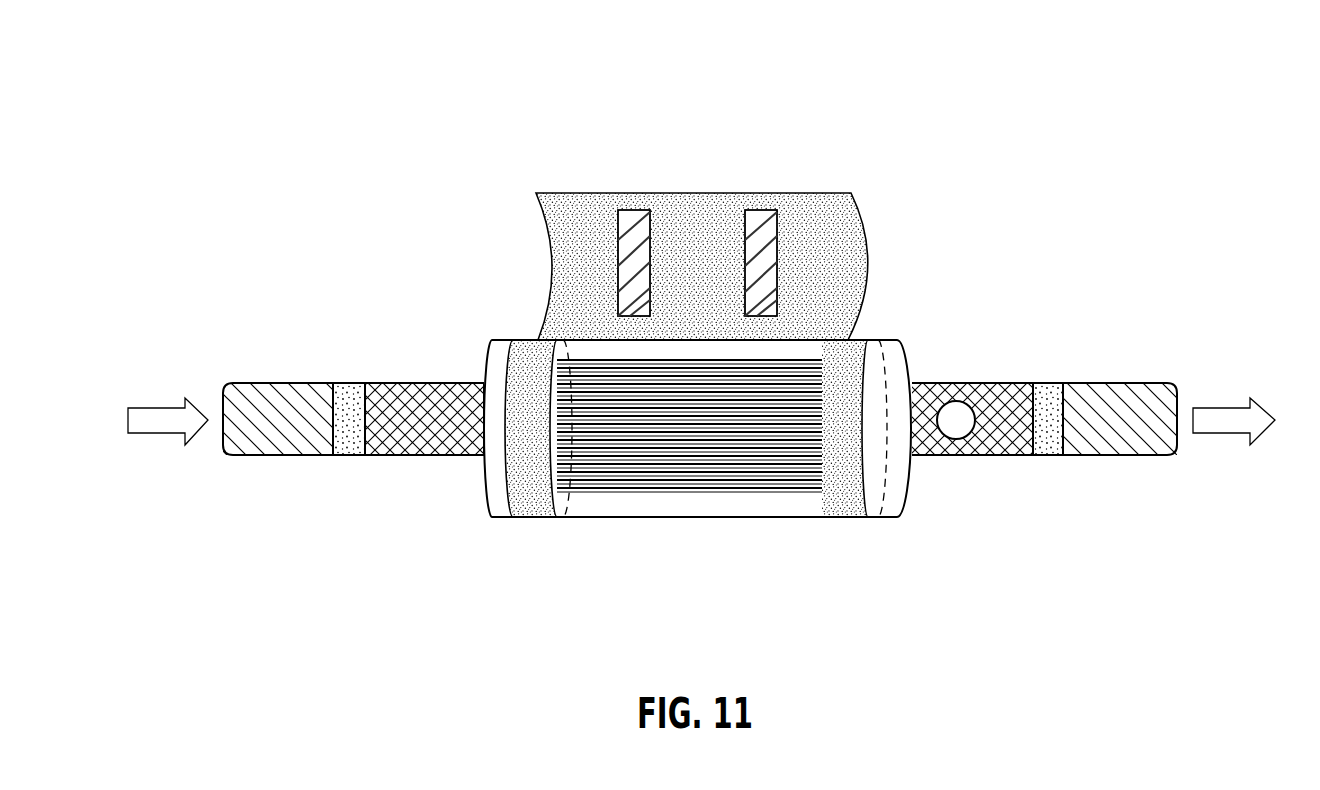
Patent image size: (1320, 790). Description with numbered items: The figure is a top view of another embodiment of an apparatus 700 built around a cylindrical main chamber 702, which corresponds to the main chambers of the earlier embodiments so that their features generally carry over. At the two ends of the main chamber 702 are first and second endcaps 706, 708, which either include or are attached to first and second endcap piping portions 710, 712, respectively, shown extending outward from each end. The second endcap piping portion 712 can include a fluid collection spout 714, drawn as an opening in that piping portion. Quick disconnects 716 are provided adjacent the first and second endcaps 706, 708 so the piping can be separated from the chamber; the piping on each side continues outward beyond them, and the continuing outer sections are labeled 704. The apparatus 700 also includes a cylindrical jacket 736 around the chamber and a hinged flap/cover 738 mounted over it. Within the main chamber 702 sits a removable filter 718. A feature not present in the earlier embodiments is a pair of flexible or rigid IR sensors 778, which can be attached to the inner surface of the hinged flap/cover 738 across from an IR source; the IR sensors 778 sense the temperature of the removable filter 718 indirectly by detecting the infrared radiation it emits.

The apparatus 700 is at (720, 42).
The cylindrical main chamber 702 is at (693, 485).
The wire 704 is at (282, 397).
The first endcap 706 is at (498, 505).
The second endcap 708 is at (888, 510).
The first endcap piping portion 710 is at (437, 397).
The second endcap piping portion 712 is at (1007, 397).
The fluid collection spout 714 is at (957, 430).
The quick disconnects 716 is at (352, 447).
The removable filter 718 is at (722, 438).
The cylindrical jacket 736 is at (537, 505).
The hinged flap/cover 738 is at (702, 237).
The IR sensors 778 is at (767, 222).